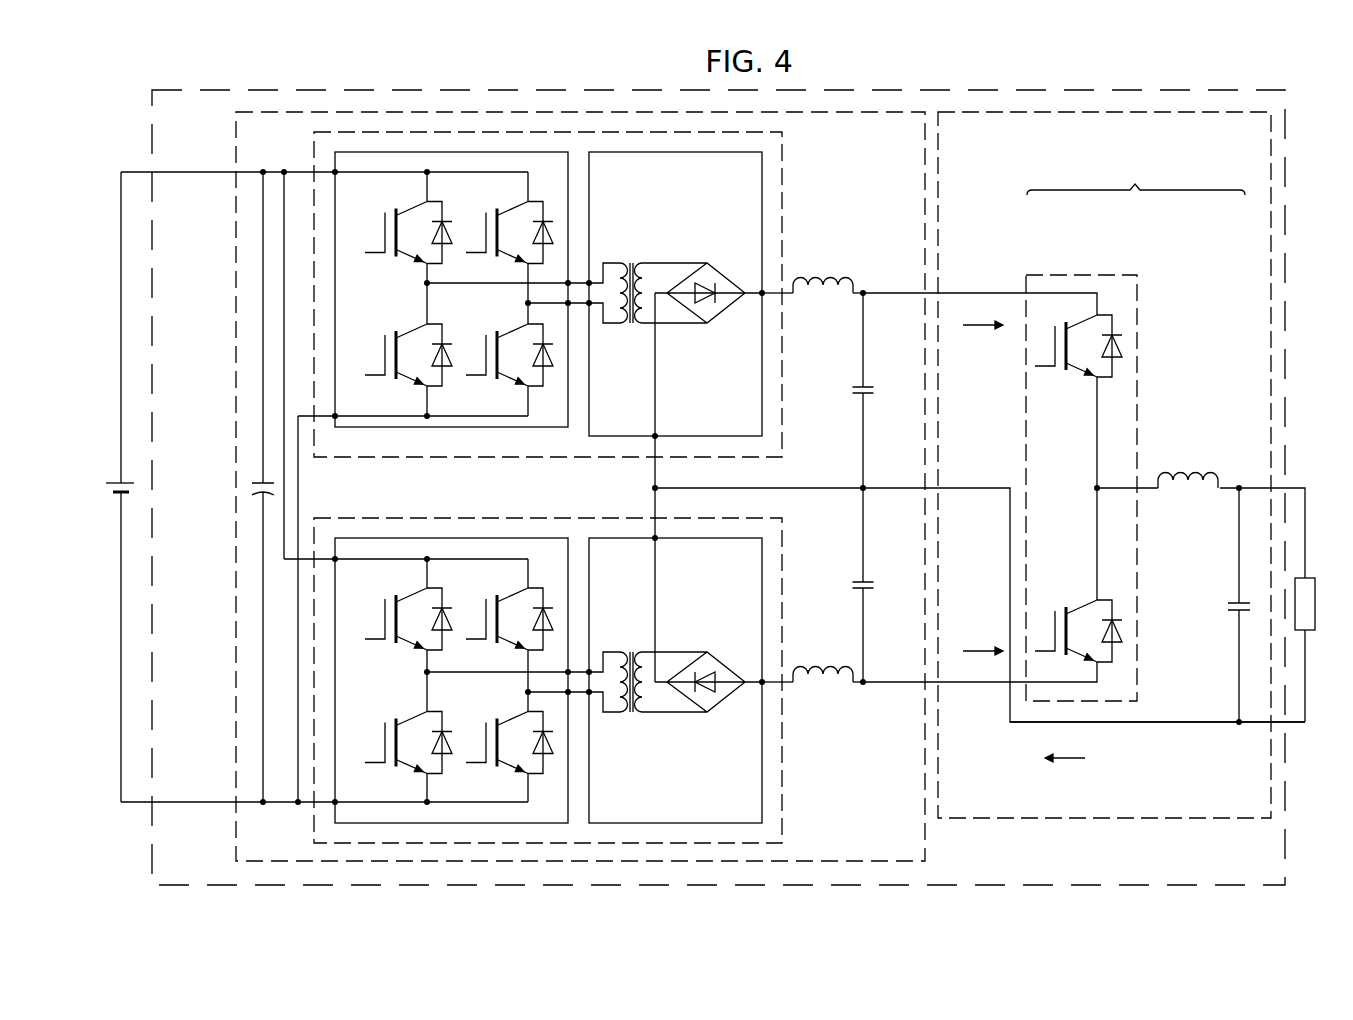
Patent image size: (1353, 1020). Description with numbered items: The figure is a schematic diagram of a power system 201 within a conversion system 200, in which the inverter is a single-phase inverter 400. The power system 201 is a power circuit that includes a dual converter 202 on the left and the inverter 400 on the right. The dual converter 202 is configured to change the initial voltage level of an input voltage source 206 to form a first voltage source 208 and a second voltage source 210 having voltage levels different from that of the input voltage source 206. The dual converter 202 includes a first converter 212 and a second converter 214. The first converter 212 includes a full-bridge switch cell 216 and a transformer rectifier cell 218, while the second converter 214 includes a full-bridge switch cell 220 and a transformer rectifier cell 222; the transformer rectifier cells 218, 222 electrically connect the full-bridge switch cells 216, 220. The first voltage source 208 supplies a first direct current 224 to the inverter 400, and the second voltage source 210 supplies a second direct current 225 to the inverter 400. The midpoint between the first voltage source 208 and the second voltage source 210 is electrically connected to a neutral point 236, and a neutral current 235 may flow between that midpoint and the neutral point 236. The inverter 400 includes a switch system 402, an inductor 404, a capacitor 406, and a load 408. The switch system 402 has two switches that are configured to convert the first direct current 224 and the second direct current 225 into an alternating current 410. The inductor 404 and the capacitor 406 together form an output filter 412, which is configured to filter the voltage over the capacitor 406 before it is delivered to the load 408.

The conversion system 200 is at (120, 106).
The power system 201 is at (151, 145).
The dual converter 202 is at (235, 137).
The input voltage source 206 is at (108, 481).
The first voltage source 208 is at (876, 389).
The second voltage source 210 is at (876, 588).
The first converter 212 is at (463, 459).
The second converter 214 is at (562, 518).
The full-bridge switch cell 216 is at (383, 232).
The transformer rectifier cell 218 is at (670, 263).
The full-bridge switch cell 220 is at (380, 745).
The transformer rectifier cell 222 is at (672, 713).
The first direct current 224 is at (985, 330).
The second direct current 225 is at (985, 648).
The neutral current 235 is at (1068, 762).
The neutral point 236 is at (855, 492).
The inverter 400 is at (1189, 820).
The switch system 402 is at (1081, 274).
The inductor 404 is at (1197, 470).
The capacitor 406 is at (1228, 604).
The load 408 is at (1318, 622).
The alternating current 410 is at (1173, 722).
The output filter 412 is at (1136, 176).